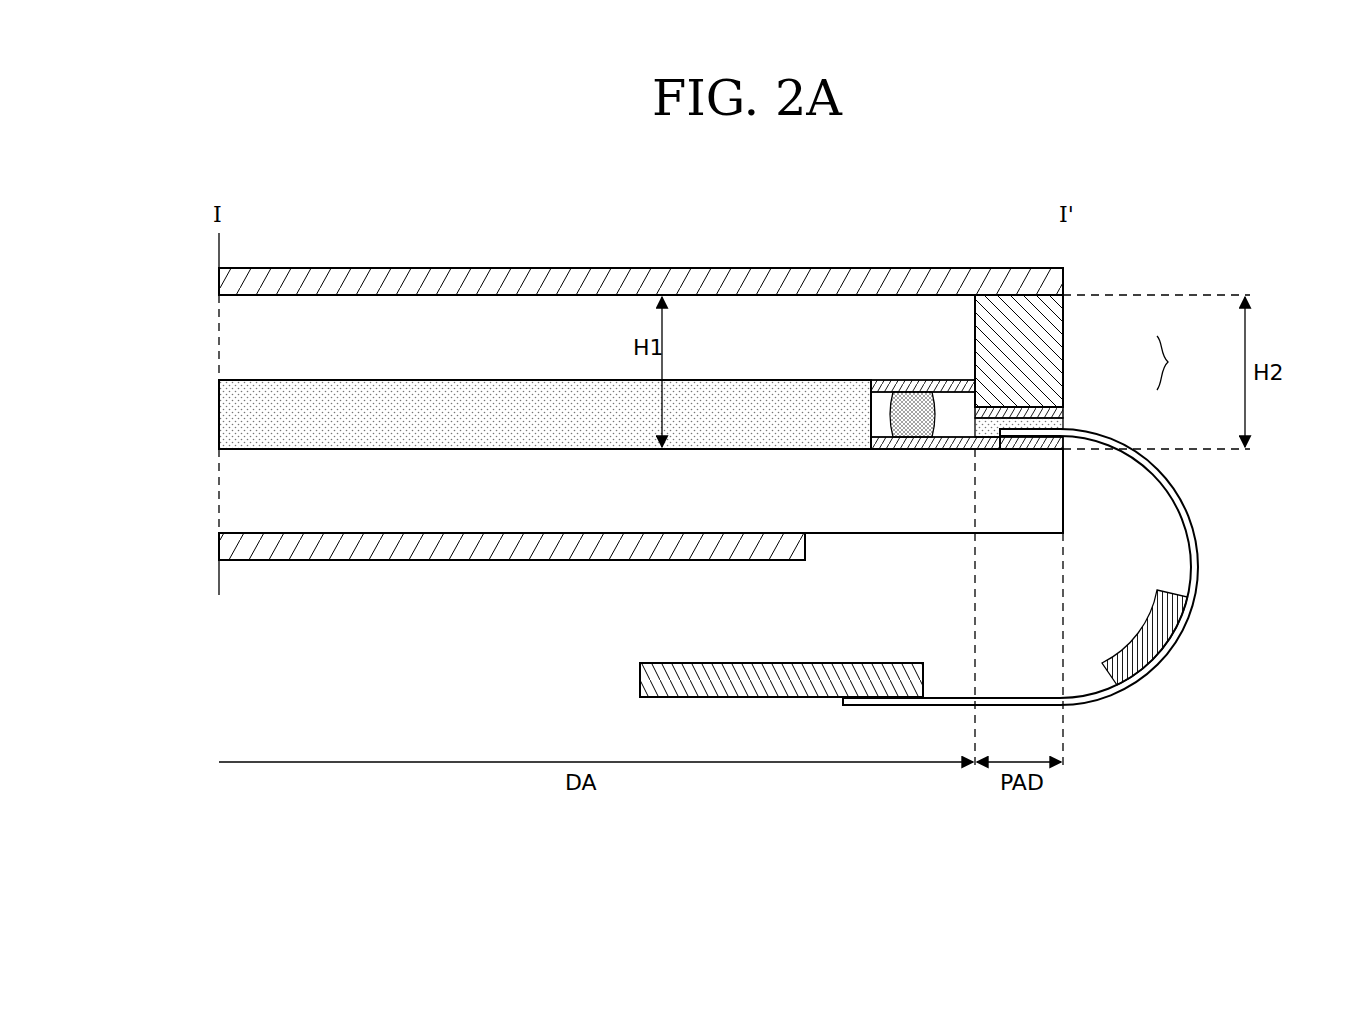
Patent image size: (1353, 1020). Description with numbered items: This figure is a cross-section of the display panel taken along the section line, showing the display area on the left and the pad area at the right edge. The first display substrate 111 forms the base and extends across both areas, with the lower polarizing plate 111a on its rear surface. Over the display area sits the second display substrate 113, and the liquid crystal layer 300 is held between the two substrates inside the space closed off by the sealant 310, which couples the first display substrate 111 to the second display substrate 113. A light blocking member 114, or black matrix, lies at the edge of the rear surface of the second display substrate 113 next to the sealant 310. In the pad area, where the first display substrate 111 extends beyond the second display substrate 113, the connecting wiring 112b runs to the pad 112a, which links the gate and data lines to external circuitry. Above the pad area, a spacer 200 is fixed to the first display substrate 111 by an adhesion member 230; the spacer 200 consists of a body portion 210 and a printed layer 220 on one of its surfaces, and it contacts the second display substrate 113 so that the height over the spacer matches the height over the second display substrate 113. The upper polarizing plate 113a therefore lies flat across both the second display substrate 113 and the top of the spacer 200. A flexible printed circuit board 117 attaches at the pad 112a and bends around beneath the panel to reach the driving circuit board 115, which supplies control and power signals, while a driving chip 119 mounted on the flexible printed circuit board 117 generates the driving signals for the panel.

The upper polarizing plate 113a is at (219, 283).
The second display substrate 113 is at (226, 343).
The liquid crystal layer 300 is at (226, 415).
The first display substrate 111 is at (226, 490).
The lower polarizing plate 111a is at (219, 546).
The body portion 210 is at (1060, 345).
The printed layer 220 is at (1047, 411).
The spacer 200 is at (1189, 363).
The adhesion member 230 is at (1063, 424).
The light blocking member 114 is at (883, 383).
The sealant 310 is at (912, 402).
The connecting wiring 112b is at (908, 450).
The pad 112a is at (1015, 450).
The flexible printed circuit board 117 is at (1190, 562).
The driving chip 119 is at (1157, 628).
The driving circuit board 115 is at (790, 668).